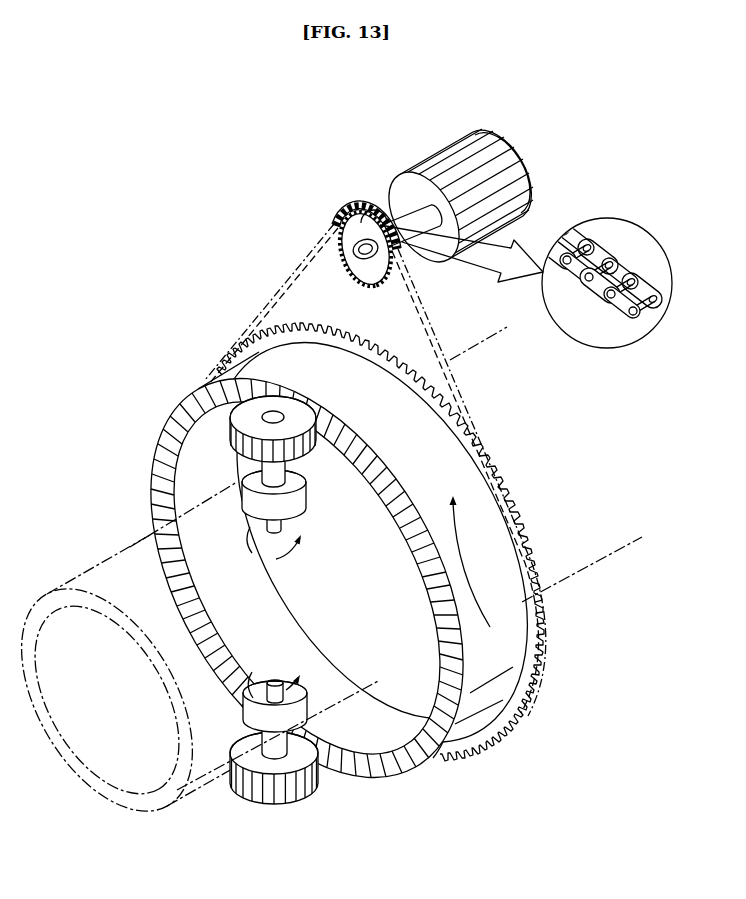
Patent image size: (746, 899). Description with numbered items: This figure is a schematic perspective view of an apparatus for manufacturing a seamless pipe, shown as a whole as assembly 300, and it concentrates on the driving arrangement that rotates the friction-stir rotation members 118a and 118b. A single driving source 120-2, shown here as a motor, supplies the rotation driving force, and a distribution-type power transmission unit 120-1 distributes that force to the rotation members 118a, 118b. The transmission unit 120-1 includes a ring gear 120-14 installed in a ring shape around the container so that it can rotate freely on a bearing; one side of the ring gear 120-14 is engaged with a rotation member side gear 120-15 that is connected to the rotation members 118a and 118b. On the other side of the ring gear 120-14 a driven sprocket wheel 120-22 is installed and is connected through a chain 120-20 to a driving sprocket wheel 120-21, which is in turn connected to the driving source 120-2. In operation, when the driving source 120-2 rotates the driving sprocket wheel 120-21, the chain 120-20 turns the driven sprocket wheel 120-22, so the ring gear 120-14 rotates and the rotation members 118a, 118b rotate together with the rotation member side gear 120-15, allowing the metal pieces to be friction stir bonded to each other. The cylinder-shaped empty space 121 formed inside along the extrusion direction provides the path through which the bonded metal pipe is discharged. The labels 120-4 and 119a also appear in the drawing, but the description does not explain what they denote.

The rotary drive system 300 is at (123, 130).
The distribution-type power transmission unit 120-1 is at (556, 736).
The single driving source 120-2 is at (446, 136).
The driving unit 120-4 is at (270, 118).
The ring gear 120-14 is at (517, 633).
The rotation member side gear 120-15 is at (248, 404).
The chain 120-20 is at (300, 268).
The driving sprocket wheel 120-21 is at (338, 220).
The driven sprocket wheel 120-22 is at (265, 312).
The rotation member 118a is at (303, 505).
The rotation member 118b is at (393, 777).
The roller shaft 119a is at (296, 556).
The empty space 121 is at (187, 803).